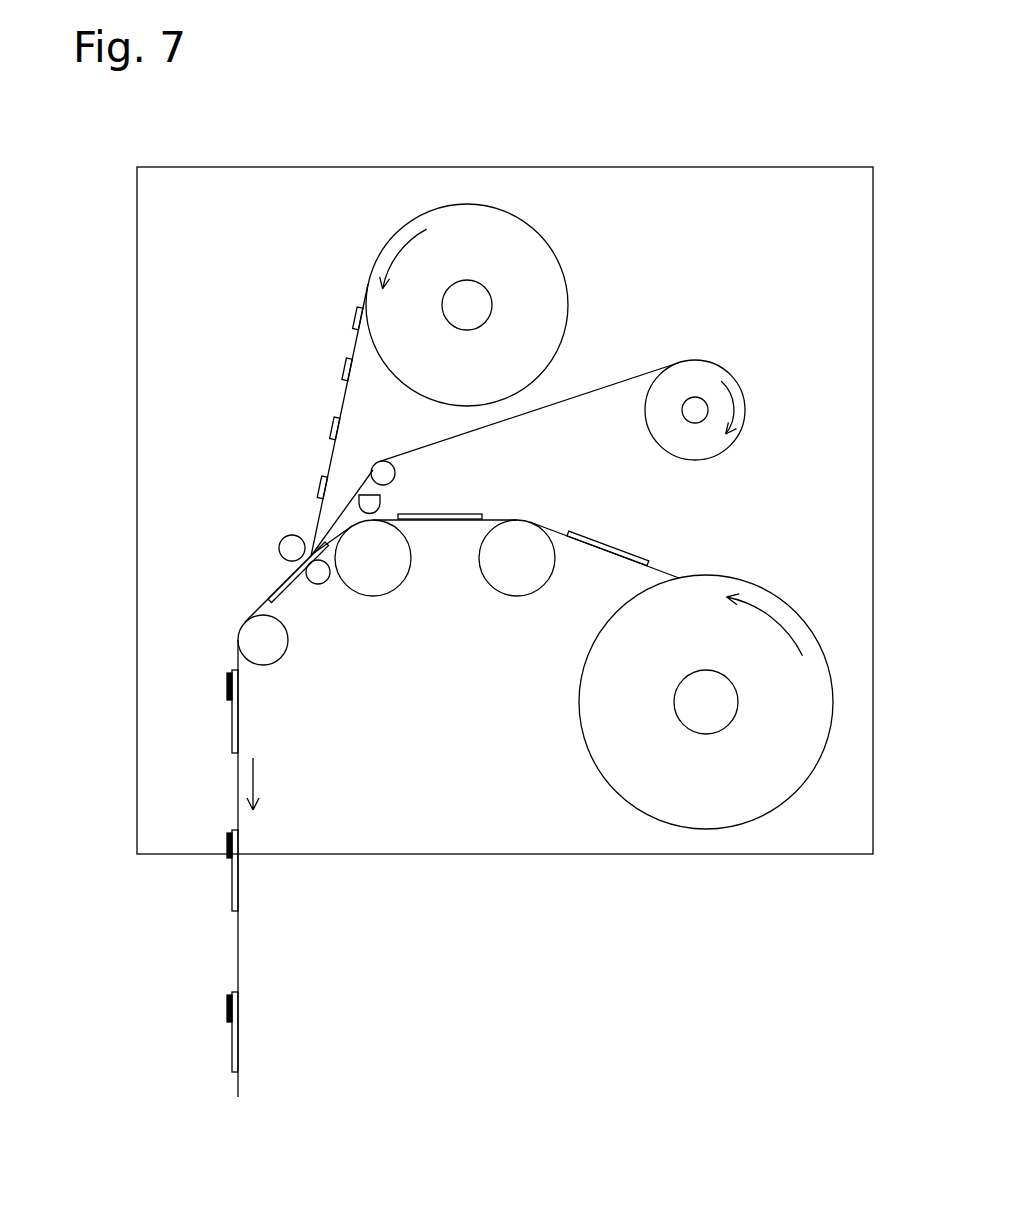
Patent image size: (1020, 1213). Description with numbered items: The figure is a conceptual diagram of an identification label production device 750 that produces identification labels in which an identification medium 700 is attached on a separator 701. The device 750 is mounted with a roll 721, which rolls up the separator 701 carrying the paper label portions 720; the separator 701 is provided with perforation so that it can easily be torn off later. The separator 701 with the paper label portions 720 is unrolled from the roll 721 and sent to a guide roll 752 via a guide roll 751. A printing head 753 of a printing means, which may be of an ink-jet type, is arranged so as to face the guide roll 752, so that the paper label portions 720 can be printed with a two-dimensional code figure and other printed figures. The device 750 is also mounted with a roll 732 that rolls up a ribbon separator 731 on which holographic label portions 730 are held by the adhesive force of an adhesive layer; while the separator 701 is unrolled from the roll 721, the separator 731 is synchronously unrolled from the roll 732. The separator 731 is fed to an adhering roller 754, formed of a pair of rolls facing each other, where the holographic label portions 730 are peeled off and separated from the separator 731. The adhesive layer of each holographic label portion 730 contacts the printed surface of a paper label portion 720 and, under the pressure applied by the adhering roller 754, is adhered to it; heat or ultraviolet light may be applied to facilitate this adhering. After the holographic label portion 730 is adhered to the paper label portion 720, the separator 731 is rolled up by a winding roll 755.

The identification label production device 750 is at (645, 165).
The roll 732 is at (467, 215).
The ribbon separator 731 is at (595, 388).
The winding roll 755 is at (705, 372).
The holographic label portion 730 is at (315, 491).
The printing head 753 is at (378, 500).
The adhering roller 754 is at (278, 548).
The guide roll 752 is at (368, 585).
The guide roll 751 is at (513, 585).
The paper label portion 720 is at (588, 532).
The separator 701 is at (658, 567).
The identification medium 700 is at (226, 716).
The roll 721 is at (705, 815).